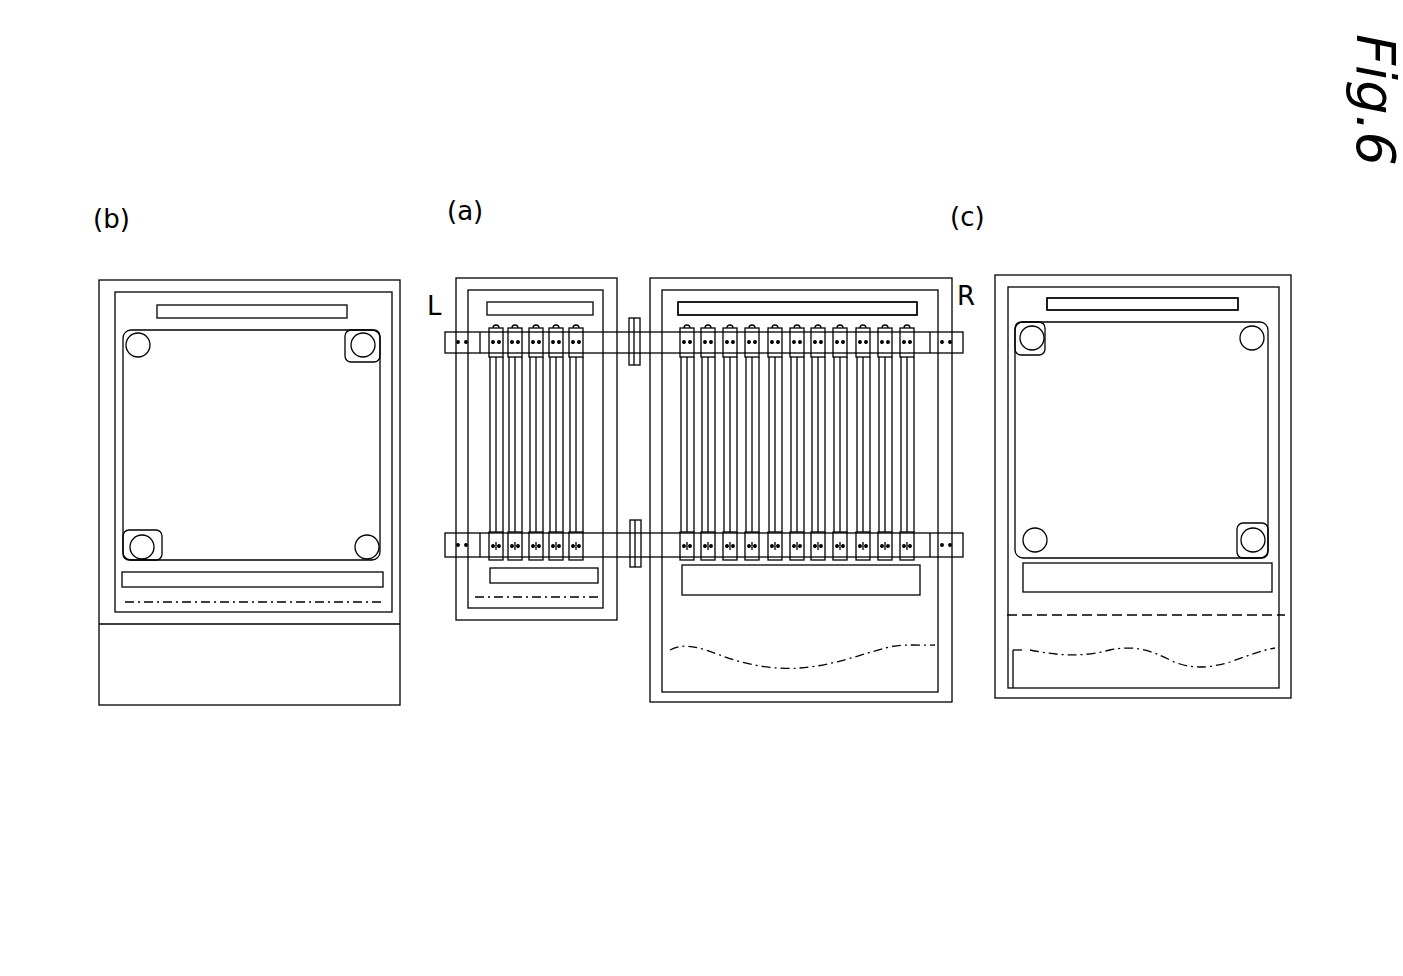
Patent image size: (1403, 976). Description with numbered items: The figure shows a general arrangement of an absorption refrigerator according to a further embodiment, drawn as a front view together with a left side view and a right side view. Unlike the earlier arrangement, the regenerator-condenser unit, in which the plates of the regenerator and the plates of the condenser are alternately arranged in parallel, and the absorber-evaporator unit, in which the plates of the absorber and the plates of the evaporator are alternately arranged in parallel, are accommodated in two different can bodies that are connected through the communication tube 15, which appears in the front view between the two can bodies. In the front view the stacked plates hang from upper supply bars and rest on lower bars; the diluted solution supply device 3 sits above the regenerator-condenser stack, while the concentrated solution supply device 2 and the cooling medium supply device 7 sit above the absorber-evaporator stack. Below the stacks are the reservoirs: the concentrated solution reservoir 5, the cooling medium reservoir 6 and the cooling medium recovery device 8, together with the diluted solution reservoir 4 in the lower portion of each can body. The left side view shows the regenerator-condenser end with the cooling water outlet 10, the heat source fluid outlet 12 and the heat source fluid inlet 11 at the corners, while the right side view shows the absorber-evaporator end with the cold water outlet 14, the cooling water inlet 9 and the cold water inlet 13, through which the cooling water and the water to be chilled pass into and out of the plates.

The concentrated solution supply device 2 is at (773, 308).
The diluted solution supply device 3 is at (192, 313).
The diluted solution reservoir 4 is at (262, 677).
The concentrated solution reservoir 5 is at (227, 603).
The cooling medium reservoir 6 is at (318, 577).
The cooling medium supply device 7 is at (958, 306).
The cooling medium recovery device 8 is at (767, 580).
The cooling water inlet 9 is at (367, 550).
The cooling water outlet 10 is at (135, 345).
The heat source fluid inlet 11 is at (138, 568).
The heat source fluid outlet 12 is at (365, 343).
The cold water inlet 13 is at (1255, 542).
The cold water outlet 14 is at (1030, 333).
The communication tube 15 is at (634, 318).